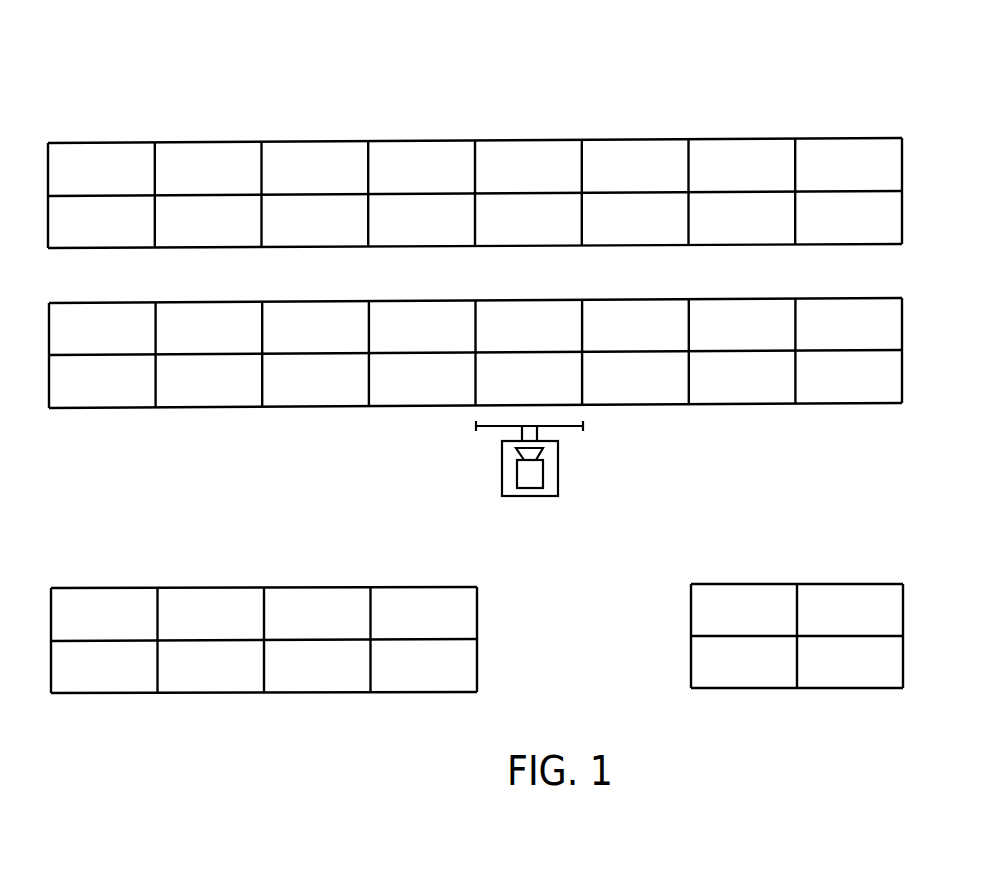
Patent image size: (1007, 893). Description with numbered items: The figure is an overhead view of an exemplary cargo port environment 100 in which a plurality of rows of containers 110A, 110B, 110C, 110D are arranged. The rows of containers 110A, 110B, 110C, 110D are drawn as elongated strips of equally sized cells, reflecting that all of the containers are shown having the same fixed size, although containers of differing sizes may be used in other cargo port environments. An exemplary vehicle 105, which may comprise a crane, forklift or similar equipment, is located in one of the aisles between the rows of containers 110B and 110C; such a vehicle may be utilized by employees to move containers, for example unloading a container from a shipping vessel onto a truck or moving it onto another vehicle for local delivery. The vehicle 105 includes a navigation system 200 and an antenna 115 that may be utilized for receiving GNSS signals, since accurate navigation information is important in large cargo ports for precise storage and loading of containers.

The cargo port environment 100 is at (833, 86).
The row of containers 110A is at (902, 213).
The row of containers 110B is at (902, 372).
The row of containers 110C is at (477, 660).
The row of containers 110D is at (903, 657).
The vehicle 105 is at (527, 459).
The antenna 115 is at (541, 452).
The navigation system 200 is at (543, 478).